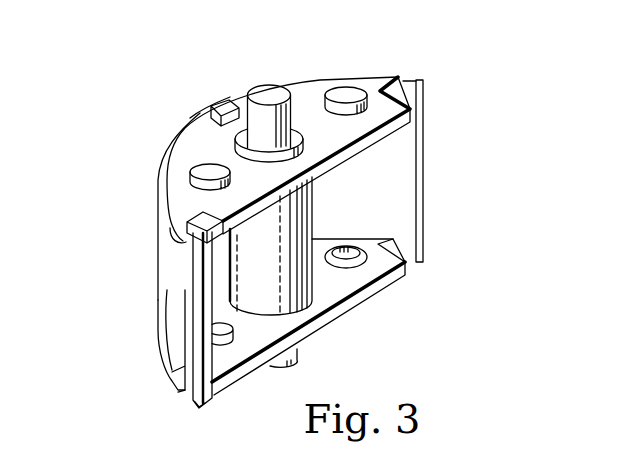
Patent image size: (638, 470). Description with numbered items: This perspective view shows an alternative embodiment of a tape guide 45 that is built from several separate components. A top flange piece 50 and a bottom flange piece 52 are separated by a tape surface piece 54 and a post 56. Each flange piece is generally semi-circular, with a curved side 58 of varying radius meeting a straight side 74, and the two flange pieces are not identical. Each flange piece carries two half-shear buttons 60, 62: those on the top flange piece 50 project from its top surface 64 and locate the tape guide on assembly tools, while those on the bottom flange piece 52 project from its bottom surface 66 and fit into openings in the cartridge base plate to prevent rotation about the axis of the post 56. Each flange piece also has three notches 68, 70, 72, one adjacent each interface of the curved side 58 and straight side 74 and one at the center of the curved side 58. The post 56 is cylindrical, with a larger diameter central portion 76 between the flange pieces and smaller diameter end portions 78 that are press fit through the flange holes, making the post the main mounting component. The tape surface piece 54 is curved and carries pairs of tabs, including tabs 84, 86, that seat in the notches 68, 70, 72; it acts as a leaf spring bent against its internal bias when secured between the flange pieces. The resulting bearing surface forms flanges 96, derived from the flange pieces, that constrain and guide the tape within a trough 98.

The tape guide 45 is at (496, 99).
The top flange piece 50 is at (322, 72).
The bottom flange piece 52 is at (412, 285).
The tape surface piece 54 is at (176, 292).
The post 56 is at (267, 81).
The curved side 58 is at (164, 226).
The button 60 is at (208, 170).
The button 62 is at (353, 90).
The top surface 64 is at (411, 117).
The bottom surface 66 is at (314, 344).
The notch 68 is at (213, 398).
The notch 70 is at (217, 113).
The notch 72 is at (412, 265).
The straight side 74 is at (368, 151).
The larger diameter central portion 76 is at (311, 214).
The smaller diameter end portion 78 is at (257, 132).
The tab 84 is at (223, 103).
The tab 86 is at (418, 83).
The flange 96 is at (157, 210).
The trough 98 is at (159, 336).